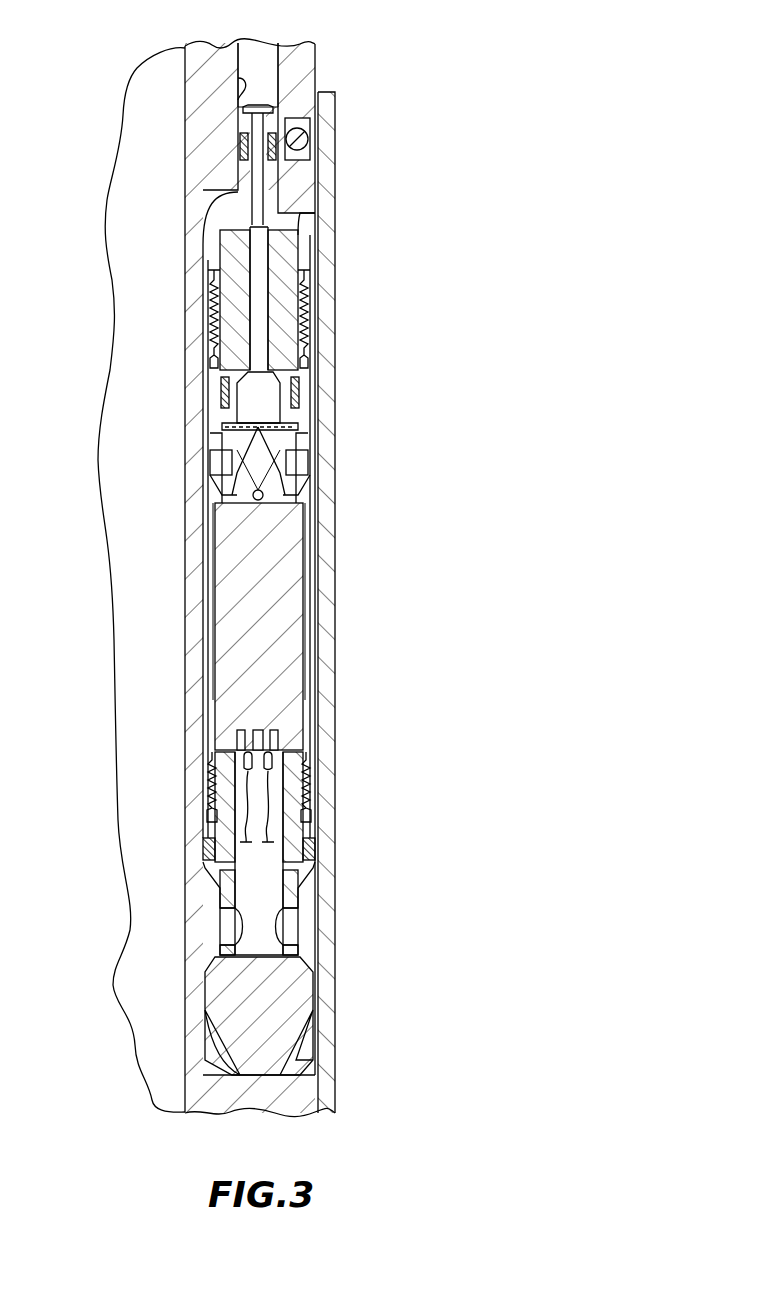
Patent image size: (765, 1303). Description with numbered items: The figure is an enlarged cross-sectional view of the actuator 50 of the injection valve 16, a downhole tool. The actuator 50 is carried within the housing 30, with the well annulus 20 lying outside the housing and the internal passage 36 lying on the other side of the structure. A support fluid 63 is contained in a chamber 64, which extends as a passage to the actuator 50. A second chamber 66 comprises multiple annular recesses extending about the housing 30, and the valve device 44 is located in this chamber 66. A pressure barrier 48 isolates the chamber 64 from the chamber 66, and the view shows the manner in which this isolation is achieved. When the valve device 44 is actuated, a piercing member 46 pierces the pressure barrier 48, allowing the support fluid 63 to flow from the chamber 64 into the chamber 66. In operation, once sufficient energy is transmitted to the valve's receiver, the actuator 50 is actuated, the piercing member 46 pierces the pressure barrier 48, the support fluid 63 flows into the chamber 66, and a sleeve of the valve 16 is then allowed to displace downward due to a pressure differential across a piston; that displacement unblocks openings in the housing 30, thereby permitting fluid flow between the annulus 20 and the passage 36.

The injection valve 16 is at (521, 152).
The annulus 20 is at (547, 629).
The housing 30 is at (317, 63).
The passage 36 is at (166, 599).
The valve device 44 is at (310, 575).
The piercing member 46 is at (270, 442).
The pressure barrier 48 is at (252, 408).
The actuator 50 is at (356, 416).
The support fluid 63 is at (262, 60).
The chamber 64 is at (243, 80).
The chamber 66 is at (204, 470).